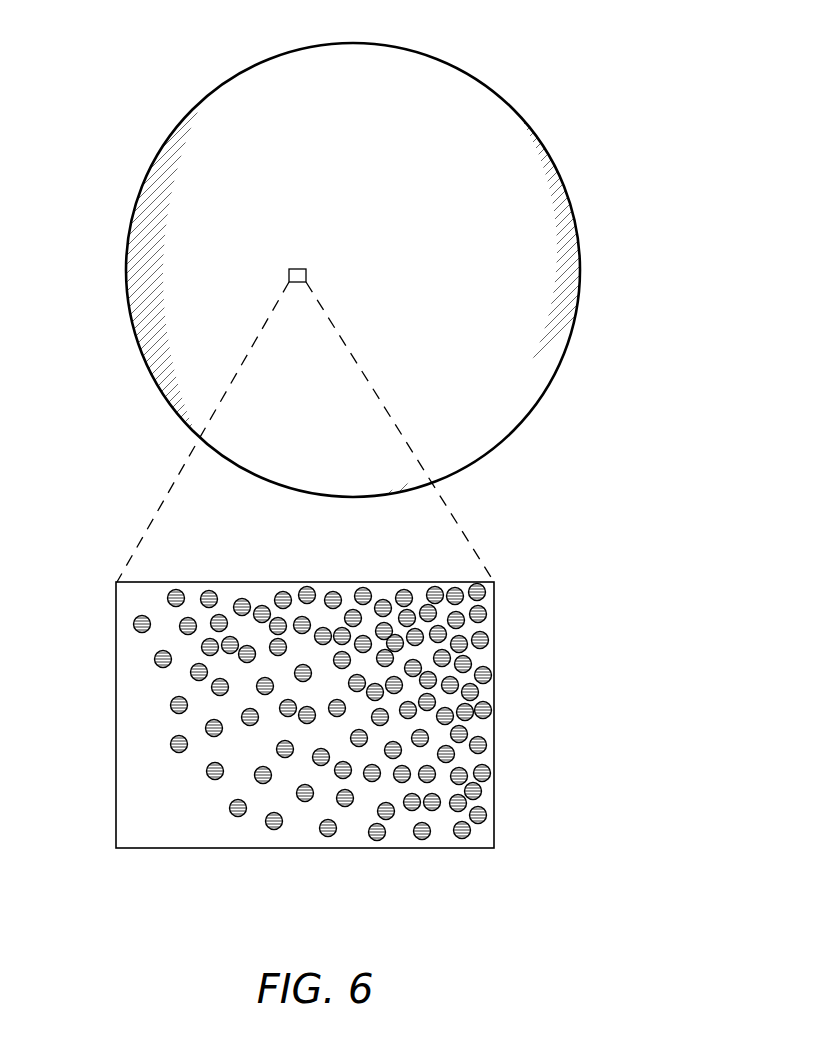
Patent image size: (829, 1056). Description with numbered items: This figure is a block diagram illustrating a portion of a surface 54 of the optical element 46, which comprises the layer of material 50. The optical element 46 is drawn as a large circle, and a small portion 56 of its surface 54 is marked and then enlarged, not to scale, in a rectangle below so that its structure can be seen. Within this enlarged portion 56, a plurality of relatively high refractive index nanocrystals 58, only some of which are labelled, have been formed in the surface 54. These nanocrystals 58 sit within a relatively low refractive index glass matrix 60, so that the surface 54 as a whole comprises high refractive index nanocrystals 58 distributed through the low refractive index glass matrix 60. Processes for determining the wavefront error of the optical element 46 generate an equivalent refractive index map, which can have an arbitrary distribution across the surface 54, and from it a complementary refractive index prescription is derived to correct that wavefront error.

The optical element 46 is at (428, 51).
The layer of material 50 is at (510, 322).
The surface 54 is at (431, 136).
The portion 56 is at (307, 276).
The relatively high refractive index nanocrystals 58 is at (489, 672).
The relatively low refractive index glass matrix 60 is at (152, 815).